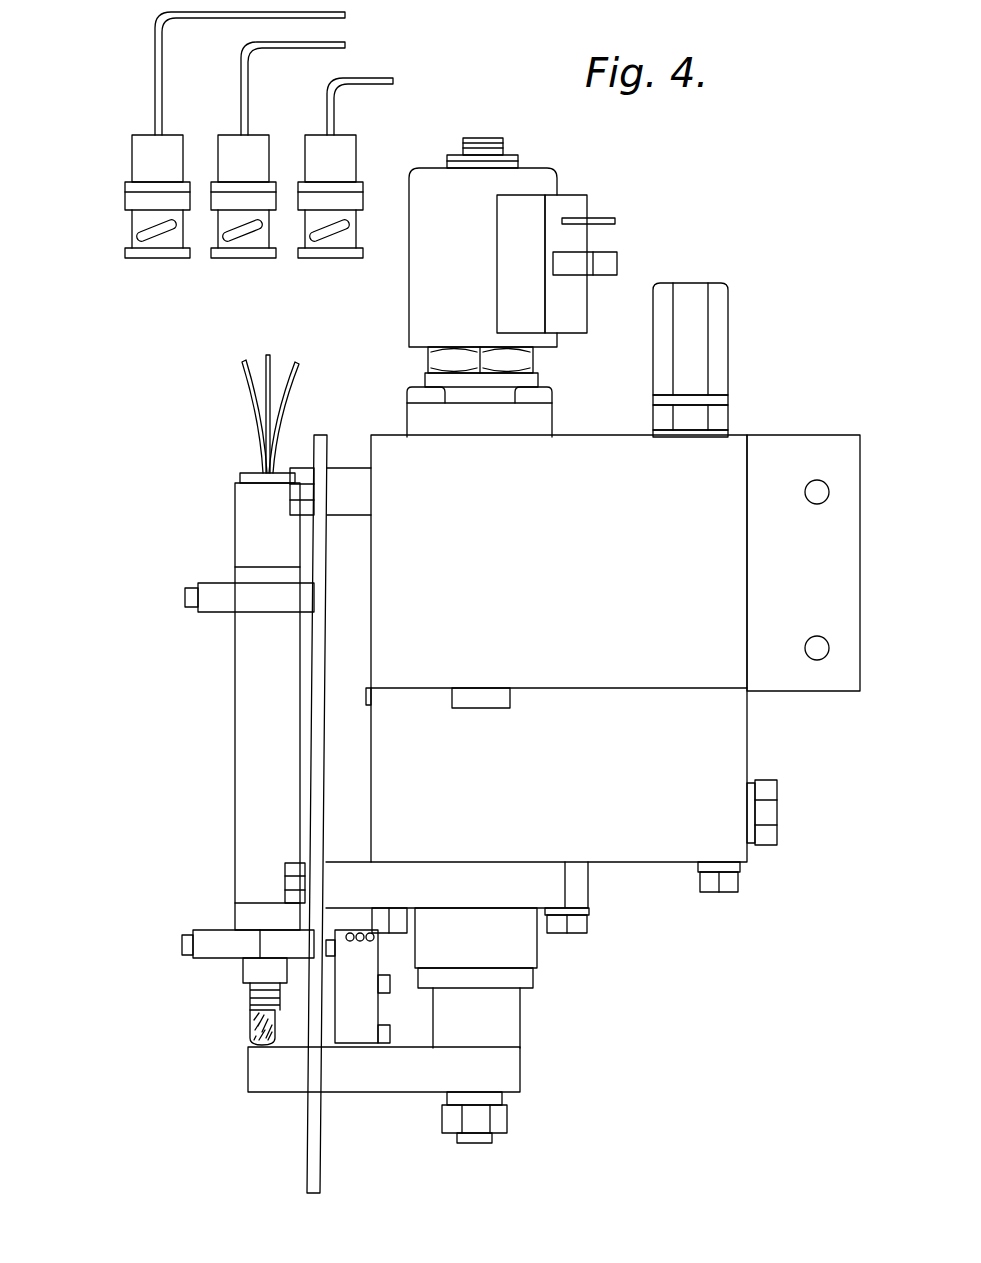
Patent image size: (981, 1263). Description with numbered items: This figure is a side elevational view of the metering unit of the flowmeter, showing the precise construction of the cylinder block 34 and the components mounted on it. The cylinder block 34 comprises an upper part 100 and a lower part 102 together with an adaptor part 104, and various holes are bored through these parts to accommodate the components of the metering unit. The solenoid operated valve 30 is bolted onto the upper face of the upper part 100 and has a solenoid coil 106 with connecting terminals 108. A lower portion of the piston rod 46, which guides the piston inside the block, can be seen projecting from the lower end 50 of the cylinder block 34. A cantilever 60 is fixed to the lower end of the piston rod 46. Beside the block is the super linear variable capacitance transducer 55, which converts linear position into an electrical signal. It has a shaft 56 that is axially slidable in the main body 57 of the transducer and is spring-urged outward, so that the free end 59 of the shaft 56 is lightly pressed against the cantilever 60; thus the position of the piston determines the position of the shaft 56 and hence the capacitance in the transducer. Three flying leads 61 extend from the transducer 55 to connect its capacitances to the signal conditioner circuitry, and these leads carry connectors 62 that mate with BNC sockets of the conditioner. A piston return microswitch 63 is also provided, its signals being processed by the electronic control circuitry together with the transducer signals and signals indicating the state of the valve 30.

The solenoid operated valve 30 is at (409, 297).
The cylinder block 34 is at (725, 745).
The piston rod 46 is at (508, 1022).
The lower end 50 is at (555, 893).
The linear variable capacitance transducer 55 is at (247, 714).
The shaft 56 is at (247, 1008).
The main body 57 is at (232, 843).
The free end 59 is at (250, 1030).
The cantilever 60 is at (350, 1075).
The flying leads 61 is at (376, 78).
The connectors 62 is at (310, 258).
The piston return microswitch 63 is at (352, 1015).
The upper part 100 is at (610, 422).
The lower part 102 is at (686, 850).
The adaptor part 104 is at (798, 462).
The solenoid coil 106 is at (540, 180).
The connecting terminals 108 is at (605, 262).